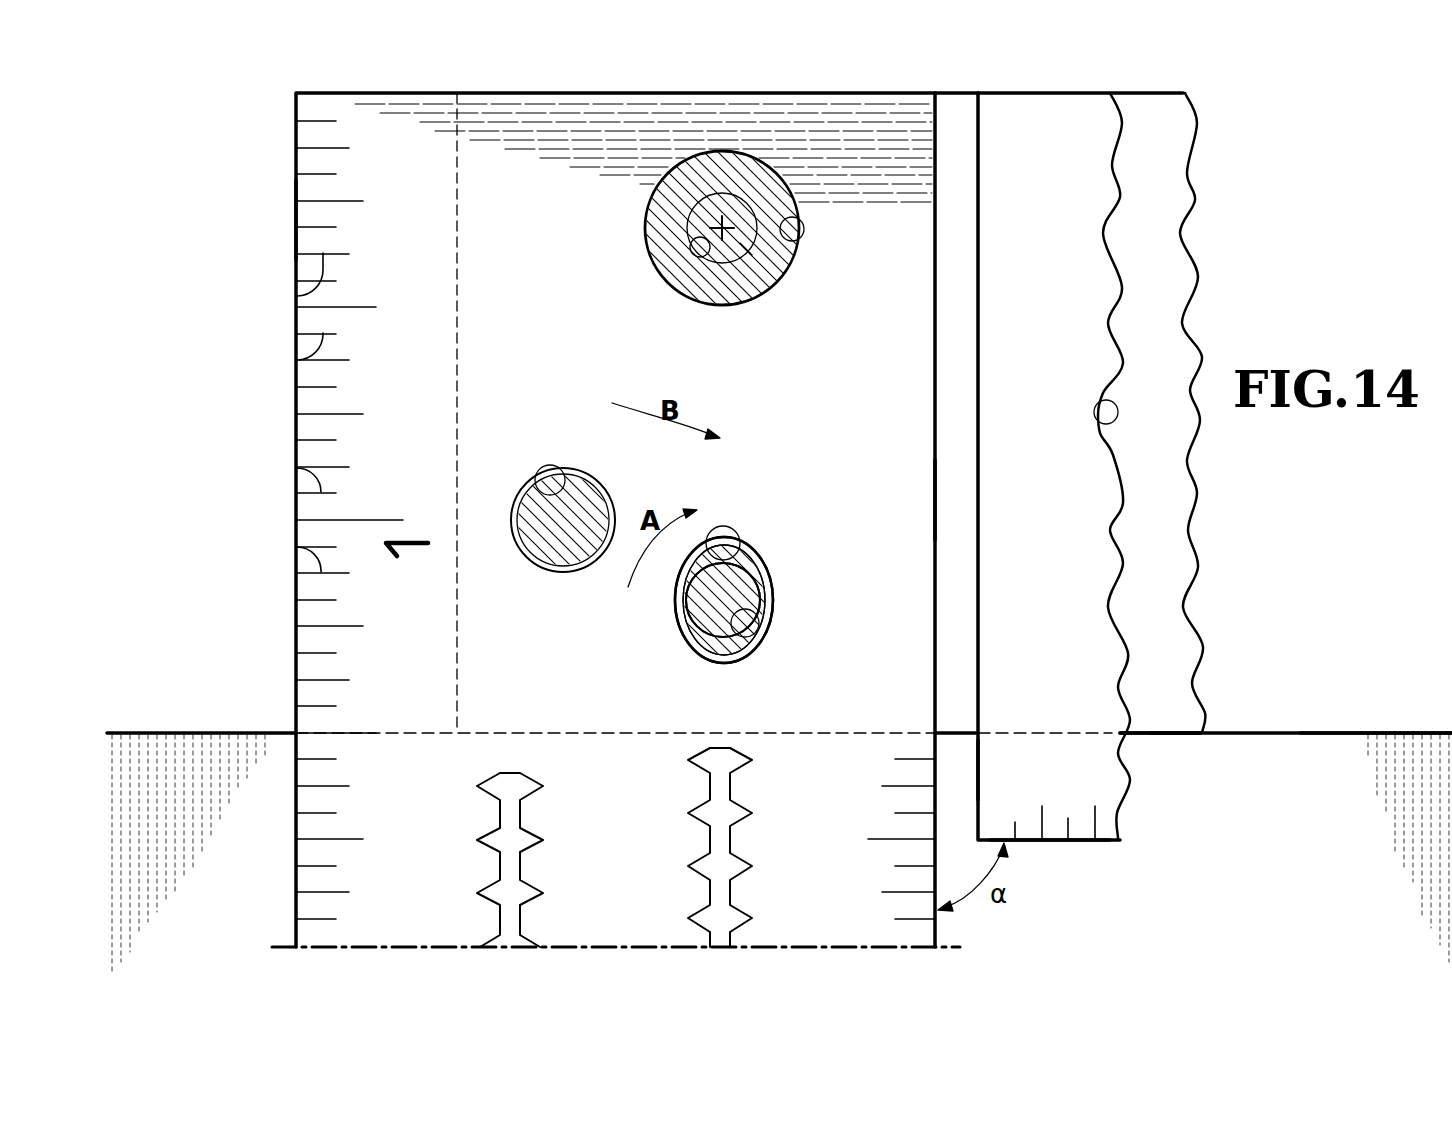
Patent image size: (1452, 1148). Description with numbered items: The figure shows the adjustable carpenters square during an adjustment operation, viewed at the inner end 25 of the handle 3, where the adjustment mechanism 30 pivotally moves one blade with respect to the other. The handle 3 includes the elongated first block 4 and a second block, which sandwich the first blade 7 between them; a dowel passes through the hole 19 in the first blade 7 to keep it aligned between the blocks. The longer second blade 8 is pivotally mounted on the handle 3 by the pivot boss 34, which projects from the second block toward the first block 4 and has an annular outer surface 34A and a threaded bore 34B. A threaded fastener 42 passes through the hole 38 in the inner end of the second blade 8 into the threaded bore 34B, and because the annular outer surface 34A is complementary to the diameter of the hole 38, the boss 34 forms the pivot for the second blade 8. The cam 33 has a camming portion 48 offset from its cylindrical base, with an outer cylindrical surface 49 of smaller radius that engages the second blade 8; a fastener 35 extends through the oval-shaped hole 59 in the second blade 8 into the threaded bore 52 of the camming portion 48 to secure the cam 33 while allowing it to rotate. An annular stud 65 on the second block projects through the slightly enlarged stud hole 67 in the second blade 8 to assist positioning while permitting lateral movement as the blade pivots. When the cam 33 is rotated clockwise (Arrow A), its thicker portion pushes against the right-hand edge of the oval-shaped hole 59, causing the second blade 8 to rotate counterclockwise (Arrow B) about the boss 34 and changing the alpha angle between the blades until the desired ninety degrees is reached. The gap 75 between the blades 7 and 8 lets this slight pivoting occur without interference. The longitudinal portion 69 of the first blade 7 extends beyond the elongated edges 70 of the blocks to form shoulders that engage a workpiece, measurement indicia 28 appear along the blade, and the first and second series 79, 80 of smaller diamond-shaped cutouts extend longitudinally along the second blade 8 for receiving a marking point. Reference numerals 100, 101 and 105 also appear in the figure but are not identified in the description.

The handle 3 is at (1210, 235).
The first block 4 is at (1154, 125).
The first blade 7 is at (1046, 125).
The second blade 8 is at (290, 420).
The hole 19 is at (1100, 400).
The inner end 25 is at (450, 168).
The measurement indicia 28 is at (297, 360).
The adjustment mechanism 30 is at (780, 538).
The cam 33 is at (688, 650).
The pivot boss 34 is at (652, 250).
The annular outer surface 34A is at (688, 250).
The threaded bore 34B is at (696, 260).
The fastener 35 is at (745, 590).
The hole 38 is at (793, 240).
The threaded fastener 42 is at (740, 243).
The camming portion 48 is at (724, 600).
The outer cylindrical surface 49 is at (723, 600).
The threaded bore 52 is at (740, 625).
The oval-shaped hole 59 is at (745, 540).
The annular stud 65 is at (550, 538).
The stud hole 67 is at (560, 478).
The longitudinal portion 69 is at (1075, 775).
The elongated edges 70 is at (1163, 735).
The gap 75 is at (962, 806).
The first series of cutouts 79 is at (700, 856).
The second series of cutouts 80 is at (488, 828).
The ground surface 100 is at (1295, 728).
The grade 101 is at (1345, 733).
The wall 105 is at (296, 222).